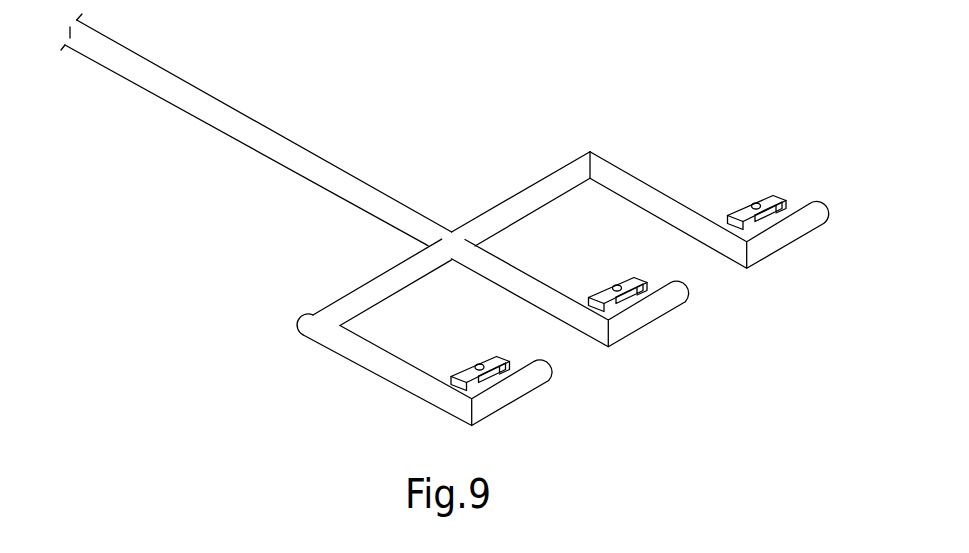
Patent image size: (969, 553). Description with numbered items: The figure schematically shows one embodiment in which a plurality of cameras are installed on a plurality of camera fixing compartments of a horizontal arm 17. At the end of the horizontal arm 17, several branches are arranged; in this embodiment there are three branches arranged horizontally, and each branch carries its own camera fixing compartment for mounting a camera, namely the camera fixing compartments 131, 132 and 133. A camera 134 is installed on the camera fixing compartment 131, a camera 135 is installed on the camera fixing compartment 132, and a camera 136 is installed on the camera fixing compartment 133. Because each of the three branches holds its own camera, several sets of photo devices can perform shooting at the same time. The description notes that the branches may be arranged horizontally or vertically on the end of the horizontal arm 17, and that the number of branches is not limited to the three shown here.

The horizontal arm 17 is at (244, 125).
The camera fixing compartment 131 is at (787, 232).
The camera fixing compartment 132 is at (648, 312).
The camera fixing compartment 133 is at (510, 392).
The camera 134 is at (765, 190).
The camera 135 is at (628, 277).
The camera 136 is at (488, 355).